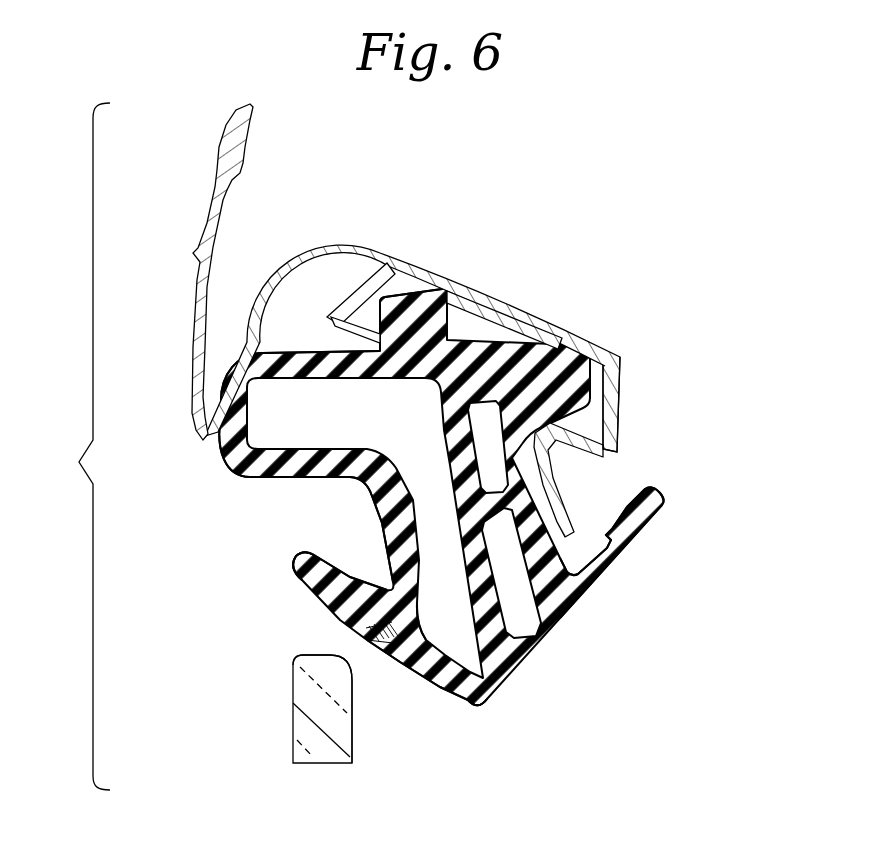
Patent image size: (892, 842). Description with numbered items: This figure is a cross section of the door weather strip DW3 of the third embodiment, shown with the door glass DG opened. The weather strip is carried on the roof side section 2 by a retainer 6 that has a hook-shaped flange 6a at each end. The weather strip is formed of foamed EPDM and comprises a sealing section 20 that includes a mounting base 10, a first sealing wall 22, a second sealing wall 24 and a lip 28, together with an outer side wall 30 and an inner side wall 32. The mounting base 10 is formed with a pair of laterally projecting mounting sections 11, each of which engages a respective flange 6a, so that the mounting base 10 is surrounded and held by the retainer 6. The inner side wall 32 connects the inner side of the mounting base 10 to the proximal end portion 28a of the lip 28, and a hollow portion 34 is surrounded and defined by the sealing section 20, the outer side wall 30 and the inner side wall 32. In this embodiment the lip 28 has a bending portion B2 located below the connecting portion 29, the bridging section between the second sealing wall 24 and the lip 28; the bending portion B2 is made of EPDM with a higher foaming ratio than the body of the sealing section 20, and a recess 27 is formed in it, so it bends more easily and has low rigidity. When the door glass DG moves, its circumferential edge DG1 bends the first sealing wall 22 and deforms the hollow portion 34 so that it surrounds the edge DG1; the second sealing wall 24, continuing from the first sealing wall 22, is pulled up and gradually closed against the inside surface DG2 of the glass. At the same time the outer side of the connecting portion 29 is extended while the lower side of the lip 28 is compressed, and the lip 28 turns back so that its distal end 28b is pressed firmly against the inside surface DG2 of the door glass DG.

The roof side section 2 is at (318, 250).
The retainer 6 is at (548, 344).
The hook-shaped flange 6a is at (352, 293).
The mounting base 10 is at (485, 330).
The mounting section 11 is at (420, 300).
The sealing section 20 is at (233, 538).
The first sealing wall 22 is at (247, 478).
The second sealing wall 24 is at (380, 523).
The recess 27 is at (394, 636).
The lip 28 is at (296, 580).
The proximal end portion 28a is at (479, 710).
The distal end 28b is at (294, 562).
The connecting portion 29 is at (418, 592).
The outer side wall 30 is at (278, 352).
The inner side wall 32 is at (637, 585).
The hollow portion 34 is at (362, 431).
The bending portion B2 is at (378, 647).
The door glass DG is at (306, 762).
The circumferential edge DG1 is at (308, 656).
The inside surface DG2 is at (354, 735).
The door weather strip DW3 is at (657, 432).